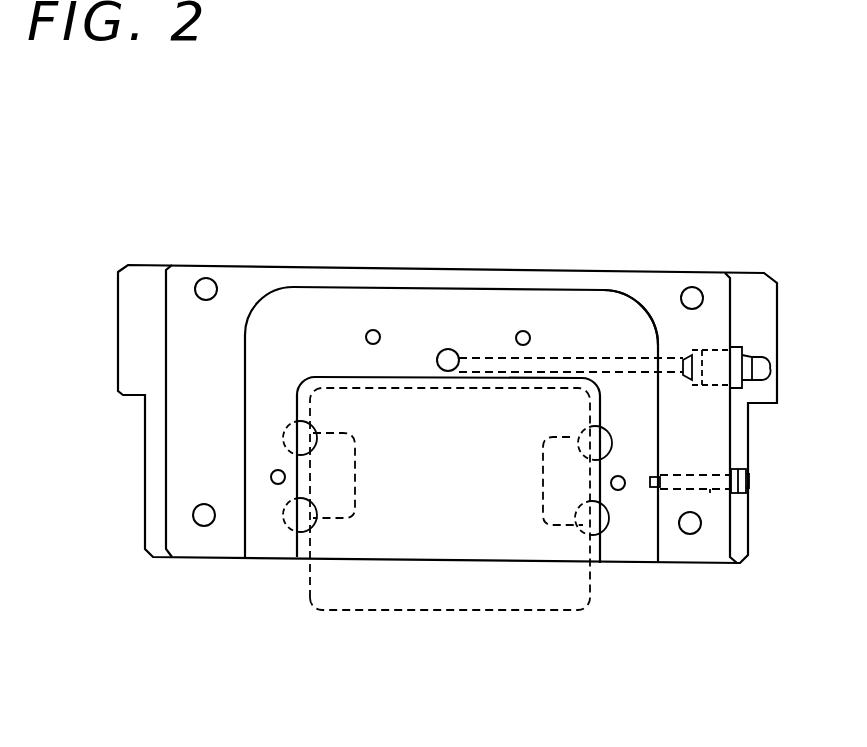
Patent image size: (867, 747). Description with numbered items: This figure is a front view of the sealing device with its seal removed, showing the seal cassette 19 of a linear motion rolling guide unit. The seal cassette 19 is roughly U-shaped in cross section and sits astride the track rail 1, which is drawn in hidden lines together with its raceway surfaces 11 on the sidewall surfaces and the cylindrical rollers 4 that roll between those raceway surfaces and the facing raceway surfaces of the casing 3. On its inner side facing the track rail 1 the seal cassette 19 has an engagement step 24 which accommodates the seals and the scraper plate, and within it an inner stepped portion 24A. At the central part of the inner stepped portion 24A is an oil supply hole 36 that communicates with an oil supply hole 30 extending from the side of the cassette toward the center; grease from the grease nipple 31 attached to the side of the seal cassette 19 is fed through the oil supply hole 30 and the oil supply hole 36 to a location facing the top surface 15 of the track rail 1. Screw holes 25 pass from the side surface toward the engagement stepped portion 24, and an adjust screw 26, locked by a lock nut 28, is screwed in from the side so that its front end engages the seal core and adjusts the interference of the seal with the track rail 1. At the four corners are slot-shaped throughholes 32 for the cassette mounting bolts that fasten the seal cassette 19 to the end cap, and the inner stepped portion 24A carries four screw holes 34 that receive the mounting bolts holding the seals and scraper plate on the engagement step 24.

The track rail 1 is at (432, 610).
The casing 3 is at (750, 447).
The cylindrical rollers 4 is at (313, 443).
The raceway surfaces 11 is at (583, 455).
The top surface 15 is at (333, 378).
The seal cassette 19 is at (183, 543).
The engagement step 24 is at (248, 523).
The inner stepped portion 24A is at (623, 320).
The screw holes 25 is at (710, 493).
The adjust screw 26 is at (747, 487).
The lock nut 28 is at (748, 510).
The oil supply hole 30 is at (582, 358).
The grease nipple 31 is at (750, 350).
The throughholes 32 is at (206, 278).
The screw holes 34 is at (373, 330).
The oil supply hole 36 is at (450, 349).